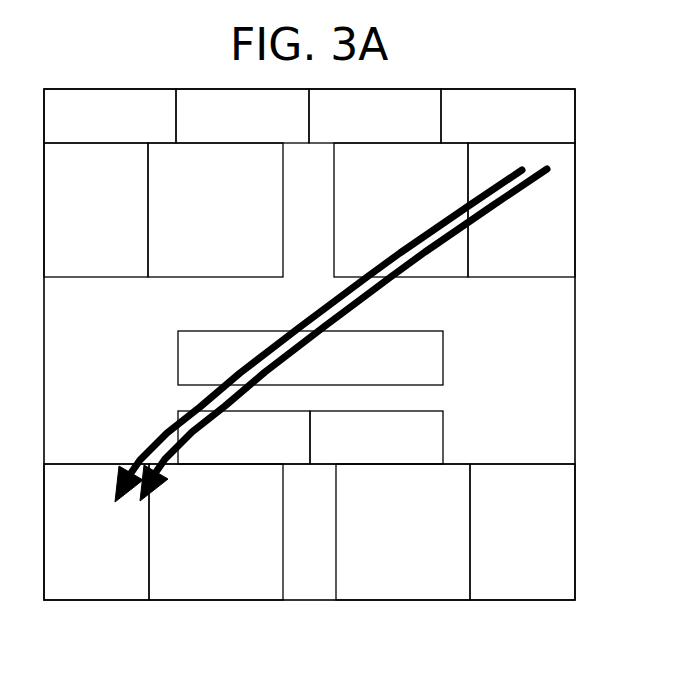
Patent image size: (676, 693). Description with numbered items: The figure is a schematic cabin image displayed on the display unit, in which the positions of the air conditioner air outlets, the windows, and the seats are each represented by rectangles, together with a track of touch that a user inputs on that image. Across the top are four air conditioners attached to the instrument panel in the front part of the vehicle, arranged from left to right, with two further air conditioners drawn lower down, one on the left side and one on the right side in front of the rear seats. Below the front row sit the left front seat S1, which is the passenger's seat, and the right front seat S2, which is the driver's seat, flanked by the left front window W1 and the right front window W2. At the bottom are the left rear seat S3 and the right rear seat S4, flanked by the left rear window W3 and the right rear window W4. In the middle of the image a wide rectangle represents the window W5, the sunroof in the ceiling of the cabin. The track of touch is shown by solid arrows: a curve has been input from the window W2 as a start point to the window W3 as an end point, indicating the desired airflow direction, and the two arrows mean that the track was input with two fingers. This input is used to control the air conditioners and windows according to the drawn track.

The left front window W1 is at (96, 210).
The right front window W2 is at (521, 210).
The left rear window W3 is at (96, 532).
The right rear window W4 is at (522, 532).
The window in the ceiling of the cabin W5 is at (310, 358).
The left front seat S1 is at (215, 210).
The right front seat S2 is at (401, 210).
The left rear seat S3 is at (216, 532).
The right rear seat S4 is at (403, 532).